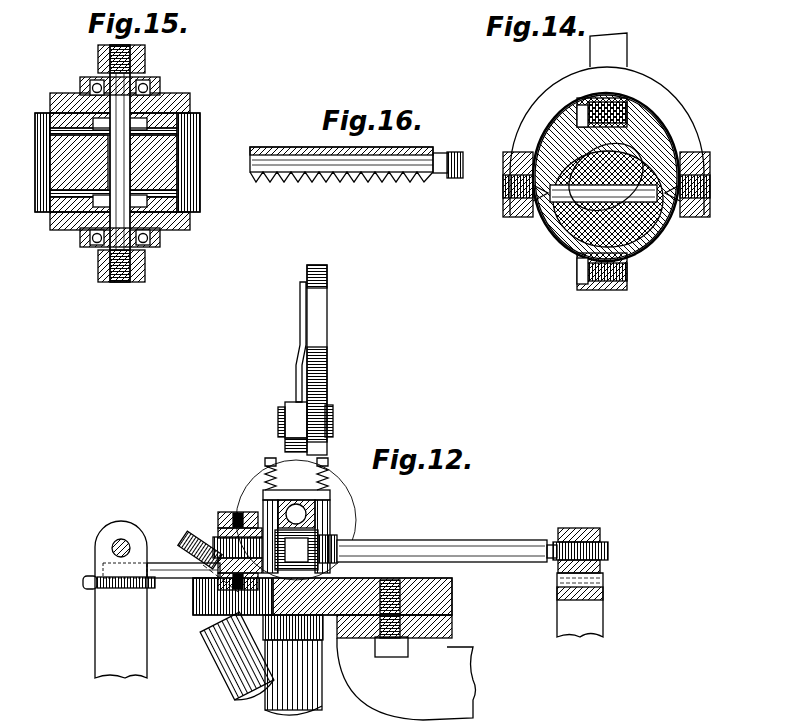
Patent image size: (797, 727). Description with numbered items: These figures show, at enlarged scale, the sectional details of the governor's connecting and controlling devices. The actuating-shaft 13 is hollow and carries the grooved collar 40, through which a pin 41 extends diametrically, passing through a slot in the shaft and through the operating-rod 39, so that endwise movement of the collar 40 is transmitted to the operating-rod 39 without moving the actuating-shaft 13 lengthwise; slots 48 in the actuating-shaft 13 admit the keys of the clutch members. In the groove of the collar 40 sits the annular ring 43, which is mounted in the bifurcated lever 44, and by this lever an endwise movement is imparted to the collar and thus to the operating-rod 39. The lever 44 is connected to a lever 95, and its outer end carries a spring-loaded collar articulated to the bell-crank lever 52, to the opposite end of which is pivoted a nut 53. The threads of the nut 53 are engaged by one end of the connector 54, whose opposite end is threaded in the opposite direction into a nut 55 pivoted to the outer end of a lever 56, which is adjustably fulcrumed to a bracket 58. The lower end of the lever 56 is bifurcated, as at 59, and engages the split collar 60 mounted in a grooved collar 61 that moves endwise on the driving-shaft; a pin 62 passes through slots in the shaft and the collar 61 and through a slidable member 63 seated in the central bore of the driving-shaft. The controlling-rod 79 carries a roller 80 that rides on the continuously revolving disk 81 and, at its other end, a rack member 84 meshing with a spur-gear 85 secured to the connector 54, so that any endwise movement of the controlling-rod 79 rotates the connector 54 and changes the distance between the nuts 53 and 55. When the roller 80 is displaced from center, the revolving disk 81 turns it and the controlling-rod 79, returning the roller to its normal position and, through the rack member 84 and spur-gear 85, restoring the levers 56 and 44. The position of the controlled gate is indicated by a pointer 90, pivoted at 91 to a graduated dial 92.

In FIG. 15, the actuating-shaft 13 is at (190, 112).
In FIG. 15, the operating-rod 39 is at (170, 172).
In FIG. 15, the grooved collar 40 is at (70, 228).
In FIG. 15, the pin 41 is at (122, 222).
In FIG. 15, the annular ring 43 is at (95, 247).
In FIG. 15, the bifurcated lever 44 is at (146, 58).
In FIG. 12, the bifurcated lever 44 is at (100, 630).
In FIG. 16, the rack member 84 is at (341, 153).
In FIG. 12, the rack member 84 is at (290, 502).
In FIG. 16, the controlling-rod 79 is at (456, 152).
In FIG. 12, the controlling-rod 79 is at (313, 512).
In FIG. 14, the lever 56 is at (627, 47).
In FIG. 12, the lever 56 is at (596, 604).
In FIG. 14, the bifurcated end 59 is at (668, 102).
In FIG. 14, the split collar 60 is at (662, 148).
In FIG. 14, the grooved collar 61 is at (626, 250).
In FIG. 14, the pin 62 is at (643, 213).
In FIG. 14, the slidable member 63 is at (578, 225).
In FIG. 12, the pointer 90 is at (300, 343).
In FIG. 12, the pivot 91 is at (333, 420).
In FIG. 12, the dial 92 is at (318, 335).
In FIG. 12, the roller 80 is at (320, 540).
In FIG. 12, the spur-gear 85 is at (340, 548).
In FIG. 12, the connector 54 is at (450, 546).
In FIG. 12, the nut 55 is at (600, 531).
In FIG. 12, the bell-crank lever 52 is at (218, 514).
In FIG. 12, the nut 53 is at (214, 533).
In FIG. 12, the revoluble disk 81 is at (186, 542).
In FIG. 12, the lever 95 is at (168, 572).
In FIG. 12, the slots 48 is at (110, 548).
In FIG. 12, the bracket 58 is at (473, 683).